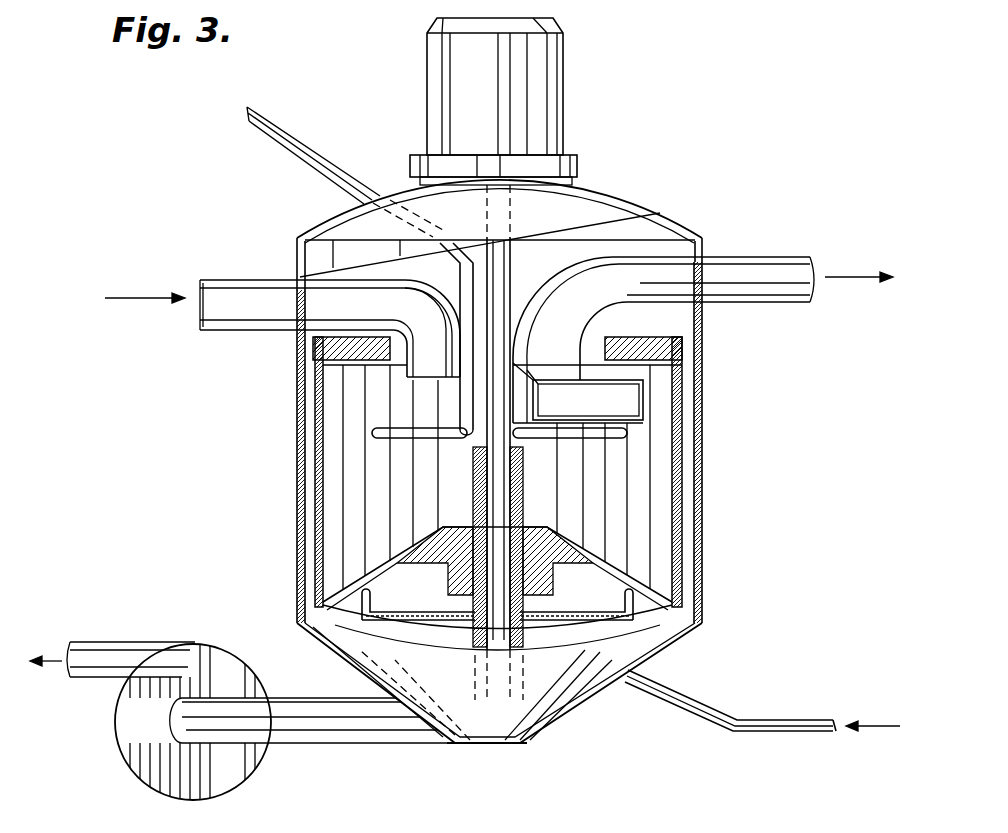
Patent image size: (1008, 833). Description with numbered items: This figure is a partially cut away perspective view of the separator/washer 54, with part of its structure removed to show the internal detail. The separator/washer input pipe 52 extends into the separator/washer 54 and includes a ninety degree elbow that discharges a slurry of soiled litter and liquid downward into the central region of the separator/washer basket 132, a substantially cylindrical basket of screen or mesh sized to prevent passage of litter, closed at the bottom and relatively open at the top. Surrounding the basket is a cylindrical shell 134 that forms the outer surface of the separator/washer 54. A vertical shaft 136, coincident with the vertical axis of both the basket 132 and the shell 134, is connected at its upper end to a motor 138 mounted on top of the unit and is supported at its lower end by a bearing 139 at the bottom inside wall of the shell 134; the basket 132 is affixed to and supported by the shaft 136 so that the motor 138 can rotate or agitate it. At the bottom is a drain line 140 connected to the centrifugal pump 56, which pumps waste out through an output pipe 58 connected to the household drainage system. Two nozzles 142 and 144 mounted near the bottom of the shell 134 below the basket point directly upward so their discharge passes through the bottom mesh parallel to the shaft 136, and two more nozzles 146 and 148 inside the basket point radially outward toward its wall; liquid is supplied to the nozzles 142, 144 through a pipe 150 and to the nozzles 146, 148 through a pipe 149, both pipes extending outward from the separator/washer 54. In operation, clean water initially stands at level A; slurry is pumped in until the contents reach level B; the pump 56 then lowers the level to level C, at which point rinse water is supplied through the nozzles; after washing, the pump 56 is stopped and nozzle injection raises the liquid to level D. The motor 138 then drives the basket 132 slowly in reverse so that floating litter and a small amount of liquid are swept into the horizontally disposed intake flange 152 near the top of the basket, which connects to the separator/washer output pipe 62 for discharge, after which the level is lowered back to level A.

The separator/washer input pipe 52 is at (233, 290).
The separator/washer 54 is at (728, 124).
The centrifugal pump 56 is at (215, 797).
The output pipe 58 is at (110, 657).
The separator/washer output pipe 62 is at (750, 273).
The separator/washer basket 132 is at (420, 505).
The cylindrical shell 134 is at (702, 377).
The vertical shaft 136 is at (510, 267).
The motor 138 is at (513, 104).
The bearing 139 is at (529, 745).
The drain line 140 is at (353, 727).
The nozzle 142 is at (355, 607).
The nozzle 144 is at (653, 620).
The nozzle 146 is at (377, 430).
The nozzle 148 is at (623, 440).
The pipe 149 is at (270, 127).
The pipe 150 is at (790, 737).
The intake flange 152 is at (640, 321).
The level A is at (707, 522).
The level B is at (707, 433).
The level C is at (707, 603).
The level D is at (707, 390).